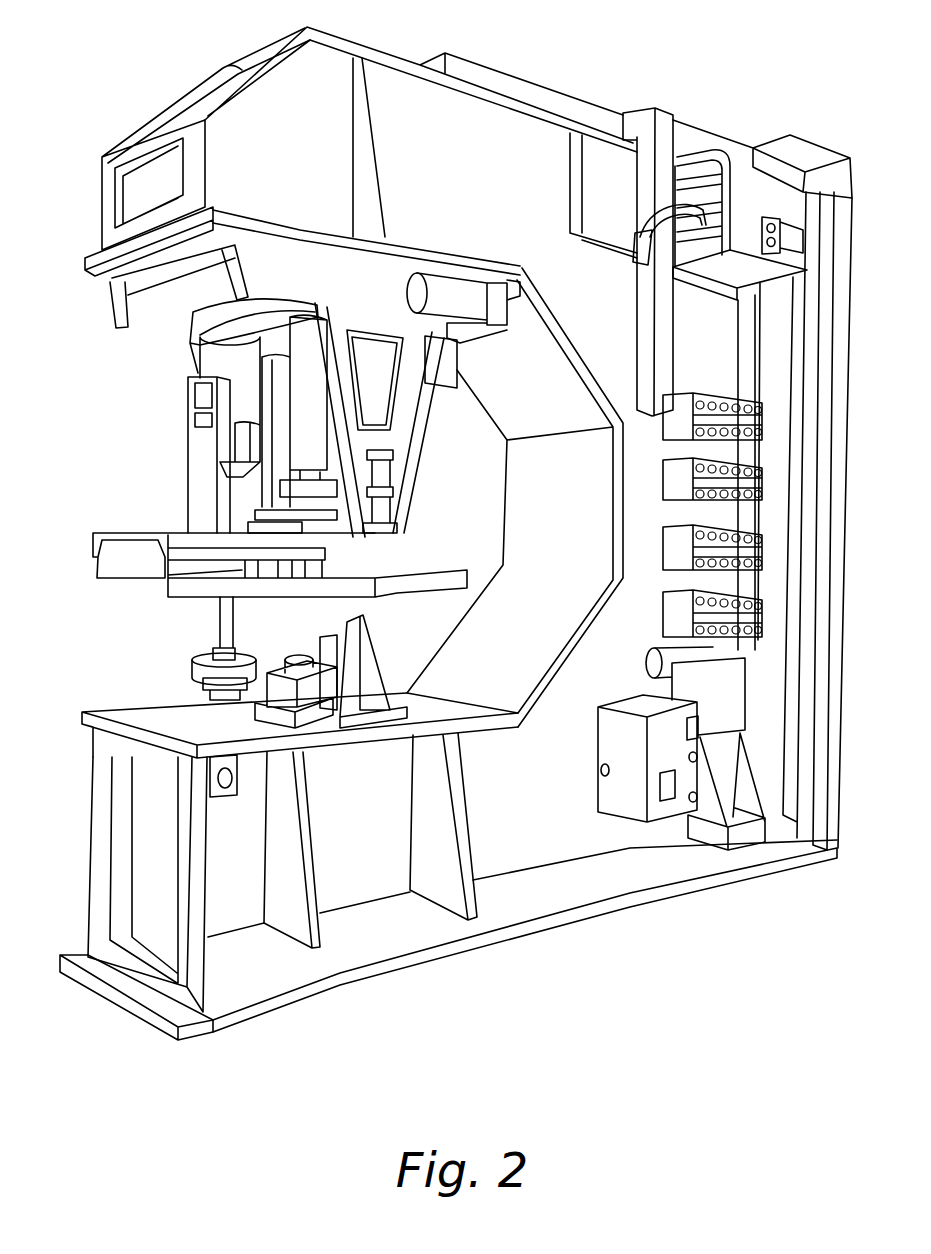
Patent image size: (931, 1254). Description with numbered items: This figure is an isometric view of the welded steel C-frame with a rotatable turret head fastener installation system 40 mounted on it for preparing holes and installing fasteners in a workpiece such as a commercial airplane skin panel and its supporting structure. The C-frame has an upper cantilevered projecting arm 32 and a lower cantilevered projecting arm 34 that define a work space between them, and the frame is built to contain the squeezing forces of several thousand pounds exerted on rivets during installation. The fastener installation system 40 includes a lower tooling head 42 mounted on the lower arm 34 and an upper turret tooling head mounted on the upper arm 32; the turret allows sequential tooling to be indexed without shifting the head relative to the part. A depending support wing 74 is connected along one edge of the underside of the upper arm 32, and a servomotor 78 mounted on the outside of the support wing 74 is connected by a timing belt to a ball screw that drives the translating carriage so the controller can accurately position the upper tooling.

The upper cantilevered projecting arm 32 is at (178, 100).
The depending support wing 74 is at (330, 265).
The servomotor 78 is at (450, 290).
The rotatable turret head fastener installation system 40 is at (160, 461).
The lower cantilevered projecting arm 34 is at (150, 750).
The lower tooling head 42 is at (312, 697).